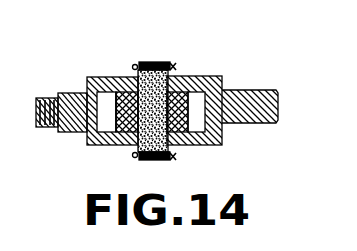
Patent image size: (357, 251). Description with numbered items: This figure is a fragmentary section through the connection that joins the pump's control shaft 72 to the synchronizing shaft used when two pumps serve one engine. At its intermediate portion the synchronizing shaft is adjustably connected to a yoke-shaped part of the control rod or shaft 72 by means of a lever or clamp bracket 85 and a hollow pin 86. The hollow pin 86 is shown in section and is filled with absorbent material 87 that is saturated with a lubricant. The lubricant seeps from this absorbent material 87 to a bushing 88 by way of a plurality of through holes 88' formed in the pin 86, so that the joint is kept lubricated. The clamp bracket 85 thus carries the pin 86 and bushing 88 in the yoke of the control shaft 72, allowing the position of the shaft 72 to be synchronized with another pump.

The control shaft 72 is at (253, 108).
The clamp bracket 85 is at (190, 101).
The hollow pin 86 is at (140, 63).
The absorbent material 87 is at (131, 94).
The bushing 88 is at (72, 139).
The through holes 88' is at (143, 166).